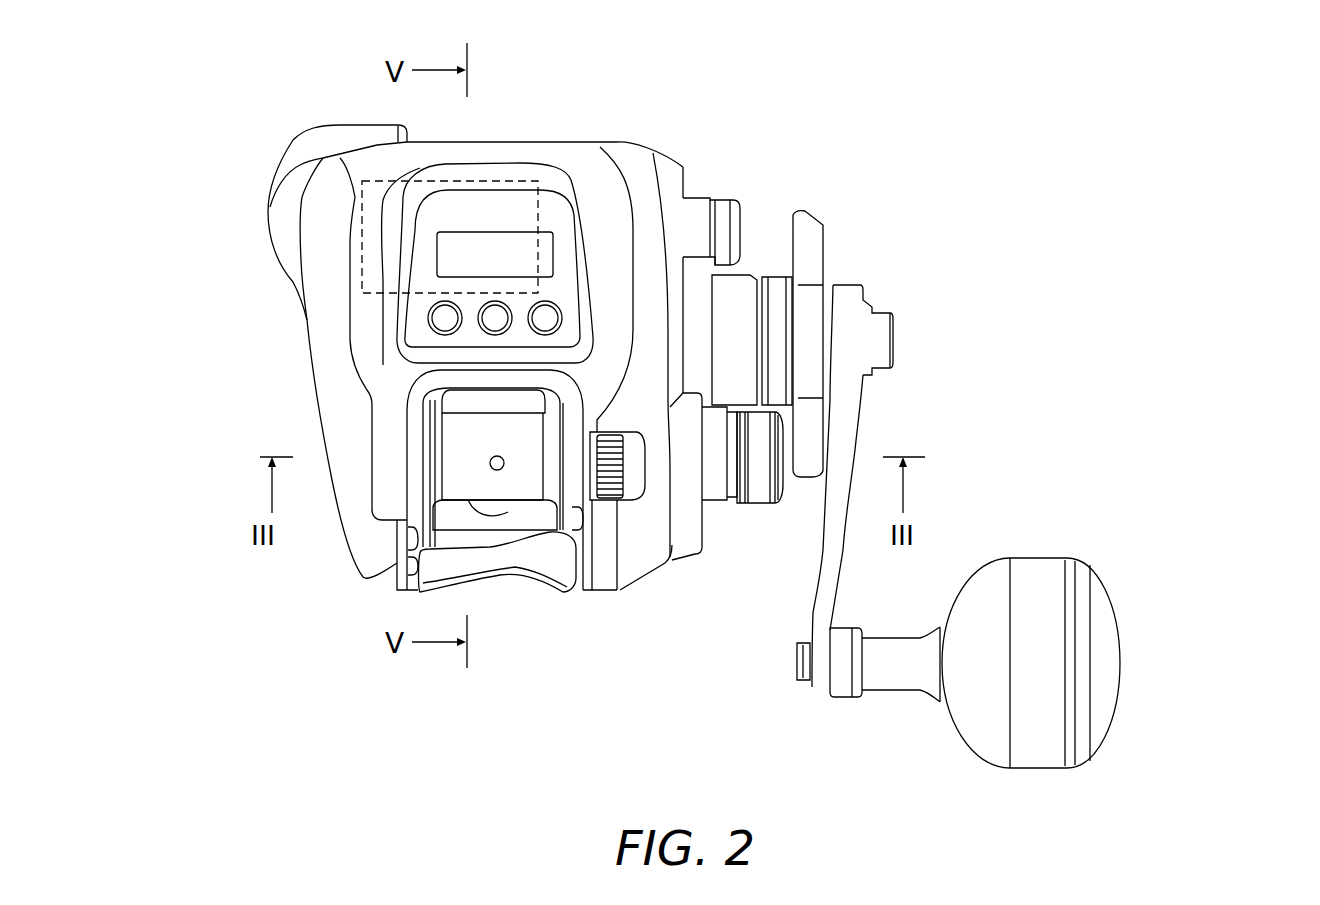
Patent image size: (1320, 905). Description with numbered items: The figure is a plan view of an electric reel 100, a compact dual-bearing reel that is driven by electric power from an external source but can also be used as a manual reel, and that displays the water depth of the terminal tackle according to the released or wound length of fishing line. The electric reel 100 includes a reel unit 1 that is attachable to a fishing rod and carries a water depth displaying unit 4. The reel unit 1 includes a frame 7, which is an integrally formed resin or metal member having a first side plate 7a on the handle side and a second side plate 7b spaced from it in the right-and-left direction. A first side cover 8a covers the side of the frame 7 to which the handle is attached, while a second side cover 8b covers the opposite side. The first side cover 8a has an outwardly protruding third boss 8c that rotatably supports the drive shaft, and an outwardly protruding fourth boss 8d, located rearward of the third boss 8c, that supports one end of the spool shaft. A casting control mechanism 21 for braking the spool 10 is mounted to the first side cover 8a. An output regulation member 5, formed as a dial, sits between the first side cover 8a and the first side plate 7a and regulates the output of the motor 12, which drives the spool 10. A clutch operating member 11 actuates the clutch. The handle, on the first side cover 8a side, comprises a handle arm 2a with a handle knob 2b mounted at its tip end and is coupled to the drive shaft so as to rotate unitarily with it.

The electric reel 100 is at (948, 239).
The reel unit 1 is at (643, 137).
The handle arm 2a is at (850, 447).
The handle knob 2b is at (1033, 582).
The water depth displaying unit 4 is at (509, 210).
The output regulation member 5 is at (635, 483).
The frame 7 is at (390, 588).
The first side plate 7a is at (568, 483).
The second side plate 7b is at (400, 562).
The first side cover 8a is at (680, 202).
The second side cover 8b is at (322, 278).
The third boss 8c is at (742, 295).
The fourth boss 8d is at (715, 497).
The spool 10 is at (518, 478).
The clutch operating member 11 is at (553, 560).
The motor 12 is at (474, 184).
The casting control mechanism 21 is at (758, 490).